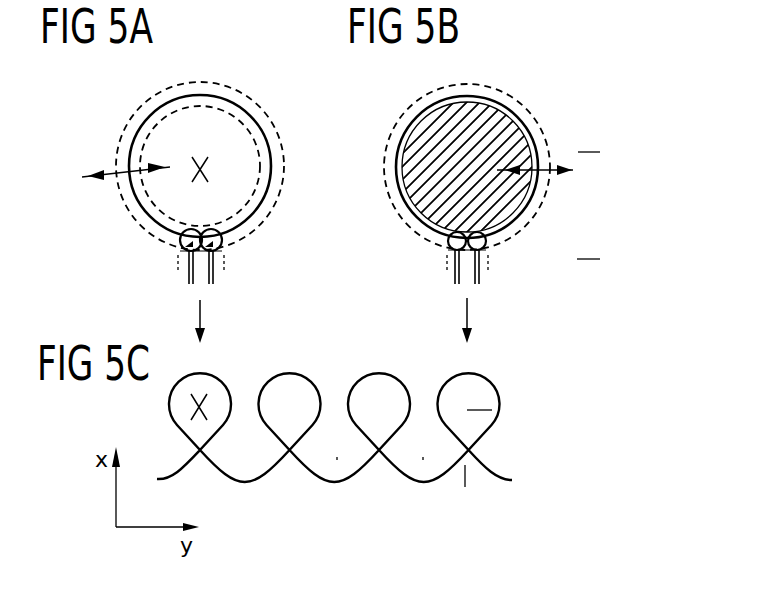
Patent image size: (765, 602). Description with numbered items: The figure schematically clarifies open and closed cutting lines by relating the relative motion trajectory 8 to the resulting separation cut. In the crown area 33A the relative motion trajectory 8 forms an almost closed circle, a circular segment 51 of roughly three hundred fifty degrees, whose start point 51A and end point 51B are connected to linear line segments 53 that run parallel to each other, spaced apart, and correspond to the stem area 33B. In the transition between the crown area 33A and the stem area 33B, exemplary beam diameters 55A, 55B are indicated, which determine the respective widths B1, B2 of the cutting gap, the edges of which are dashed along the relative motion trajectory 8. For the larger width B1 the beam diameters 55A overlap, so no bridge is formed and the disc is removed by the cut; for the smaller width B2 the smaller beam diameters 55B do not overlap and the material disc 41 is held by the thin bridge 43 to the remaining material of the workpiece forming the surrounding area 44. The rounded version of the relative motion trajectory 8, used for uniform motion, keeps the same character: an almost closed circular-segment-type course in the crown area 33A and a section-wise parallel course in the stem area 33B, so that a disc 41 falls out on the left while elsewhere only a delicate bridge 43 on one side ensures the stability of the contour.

In FIG. 5A, the relative motion trajectory 8 is at (288, 203).
In FIG. 5B, the relative motion trajectory 8 is at (555, 197).
In FIG. 5C, the relative motion trajectory 8 is at (497, 392).
In FIG. 5B, the material disc 41 is at (429, 127).
In FIG. 5C, the material disc 41 is at (492, 409).
In FIG. 5B, the bridge 43 is at (452, 320).
In FIG. 5C, the bridge 43 is at (466, 488).
In FIG. 5C, the surrounding area 44 is at (423, 457).
In FIG. 5A, the circular segment 51 is at (255, 113).
In FIG. 5B, the circular segment 51 is at (514, 108).
In FIG. 5A, the start point 51A is at (178, 245).
In FIG. 5B, the start point 51A is at (447, 247).
In FIG. 5A, the end point 51B is at (223, 247).
In FIG. 5B, the end point 51B is at (487, 247).
In FIG. 5A, the linear line segments 53 is at (218, 272).
In FIG. 5B, the linear line segments 53 is at (484, 274).
In FIG. 5A, the beam diameter 55A is at (226, 231).
In FIG. 5B, the beam diameter 55B is at (449, 238).
In FIG. 5B, the crown area 33A is at (600, 152).
In FIG. 5B, the stem area 33B is at (600, 259).
In FIG. 5A, the width of the cutting gap B1 is at (114, 165).
In FIG. 5B, the width of the cutting gap B2 is at (545, 161).